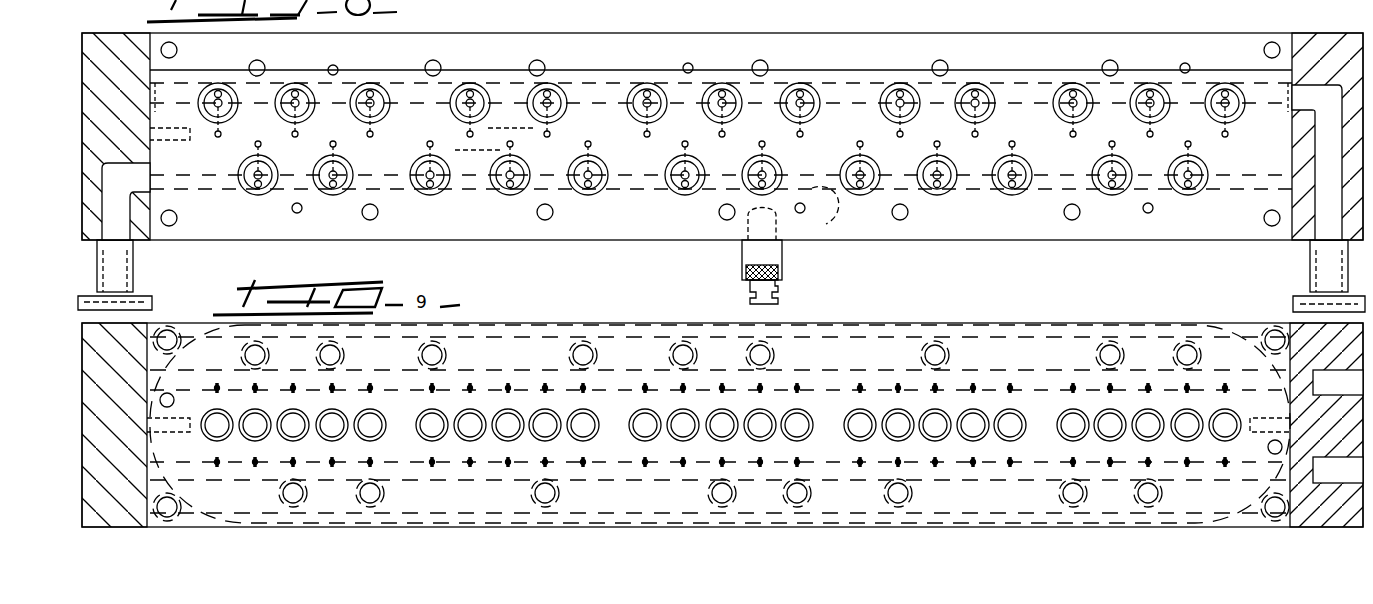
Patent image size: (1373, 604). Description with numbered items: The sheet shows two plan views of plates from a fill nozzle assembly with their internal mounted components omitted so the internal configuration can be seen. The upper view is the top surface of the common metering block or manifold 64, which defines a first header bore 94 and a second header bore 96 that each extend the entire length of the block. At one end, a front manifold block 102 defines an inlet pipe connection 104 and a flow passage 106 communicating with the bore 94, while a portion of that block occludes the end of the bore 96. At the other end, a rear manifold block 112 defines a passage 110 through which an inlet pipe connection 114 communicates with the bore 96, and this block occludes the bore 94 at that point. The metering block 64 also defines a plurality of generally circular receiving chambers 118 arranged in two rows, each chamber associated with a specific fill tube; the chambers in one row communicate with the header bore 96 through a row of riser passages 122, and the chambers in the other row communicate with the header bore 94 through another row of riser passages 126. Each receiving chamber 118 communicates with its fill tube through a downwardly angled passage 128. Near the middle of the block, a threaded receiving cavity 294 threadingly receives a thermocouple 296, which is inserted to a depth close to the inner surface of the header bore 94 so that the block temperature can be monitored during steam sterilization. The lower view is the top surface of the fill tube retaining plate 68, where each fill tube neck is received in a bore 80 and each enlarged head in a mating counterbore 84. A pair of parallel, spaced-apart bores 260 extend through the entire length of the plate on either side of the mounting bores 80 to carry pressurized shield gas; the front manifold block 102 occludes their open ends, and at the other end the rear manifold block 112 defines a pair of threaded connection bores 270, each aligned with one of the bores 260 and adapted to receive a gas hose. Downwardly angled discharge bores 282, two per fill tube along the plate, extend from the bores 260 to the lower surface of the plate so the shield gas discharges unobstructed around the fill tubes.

In FIG. 8, the metering block 64 is at (632, 33).
In FIG. 9, the fill tube retaining plate 68 is at (470, 314).
In FIG. 9, the bore 80 is at (425, 420).
In FIG. 9, the counterbore 84 is at (420, 414).
In FIG. 8, the first header bore 94 is at (793, 213).
In FIG. 8, the second header bore 96 is at (852, 70).
In FIG. 8, the front manifold block 102 is at (122, 46).
In FIG. 9, the front manifold block 102 is at (112, 525).
In FIG. 8, the inlet pipe connection 104 is at (134, 296).
In FIG. 8, the flow passage 106 is at (106, 170).
In FIG. 8, the passage 110 is at (1313, 45).
In FIG. 8, the rear manifold block 112 is at (1302, 242).
In FIG. 8, the inlet pipe connection 114 is at (1296, 312).
In FIG. 8, the receiving chamber 118 is at (527, 95).
In FIG. 8, the riser passage 122 is at (470, 88).
In FIG. 8, the riser passage 126 is at (420, 178).
In FIG. 8, the downwardly angled passage 128 is at (511, 122).
In FIG. 9, the bore 260 is at (628, 378).
In FIG. 9, the threaded connection bore 270 is at (1328, 372).
In FIG. 9, the discharge bore 282 is at (505, 388).
In FIG. 8, the threaded receiving cavity 294 is at (782, 262).
In FIG. 8, the thermocouple 296 is at (780, 283).